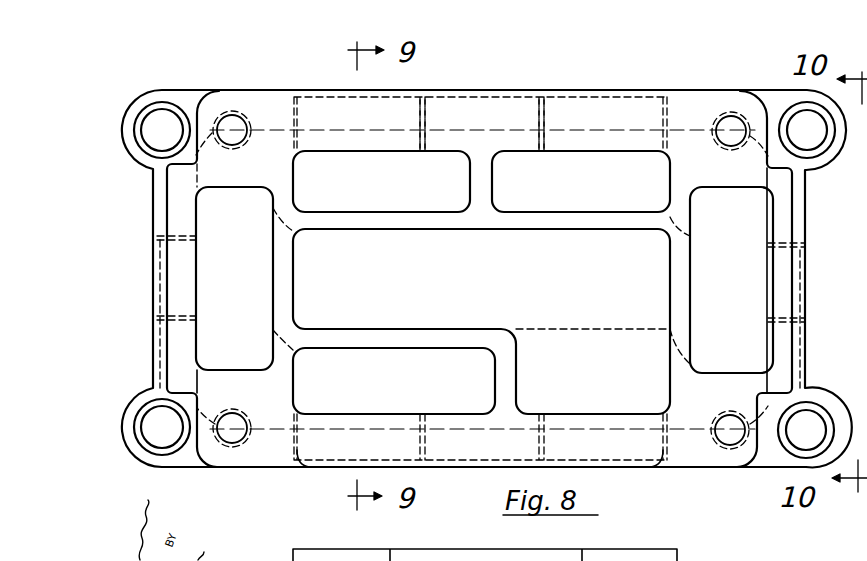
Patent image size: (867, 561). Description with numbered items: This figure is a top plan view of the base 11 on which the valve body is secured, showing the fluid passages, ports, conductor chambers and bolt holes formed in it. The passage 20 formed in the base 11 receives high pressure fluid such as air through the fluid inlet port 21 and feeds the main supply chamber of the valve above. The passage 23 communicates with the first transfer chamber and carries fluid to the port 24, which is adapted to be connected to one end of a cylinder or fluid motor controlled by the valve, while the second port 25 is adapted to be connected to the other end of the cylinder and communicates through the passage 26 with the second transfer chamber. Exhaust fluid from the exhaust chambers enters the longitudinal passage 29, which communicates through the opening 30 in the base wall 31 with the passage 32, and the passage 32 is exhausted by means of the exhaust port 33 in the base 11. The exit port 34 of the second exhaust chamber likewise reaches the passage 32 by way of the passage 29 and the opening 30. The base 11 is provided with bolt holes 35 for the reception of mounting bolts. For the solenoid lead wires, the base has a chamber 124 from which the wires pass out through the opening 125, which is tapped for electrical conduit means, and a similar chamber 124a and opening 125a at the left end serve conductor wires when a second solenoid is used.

The base 11 is at (819, 307).
The passage 20 is at (411, 352).
The fluid inlet port 21 is at (866, 197).
The passage 23 is at (384, 211).
The port 24 is at (425, 103).
The second port 25 is at (555, 112).
The passage 26 is at (551, 211).
The longitudinal passage 29 is at (327, 330).
The opening 30 is at (518, 342).
The base wall 31 is at (600, 334).
The passage 32 is at (570, 352).
The exhaust port 33 is at (655, 470).
The exit port 34 is at (823, 434).
The bolt holes 35 is at (145, 438).
The chamber 124 is at (708, 188).
The chamber 124a is at (211, 189).
The opening 125 is at (800, 249).
The opening 125a is at (165, 243).